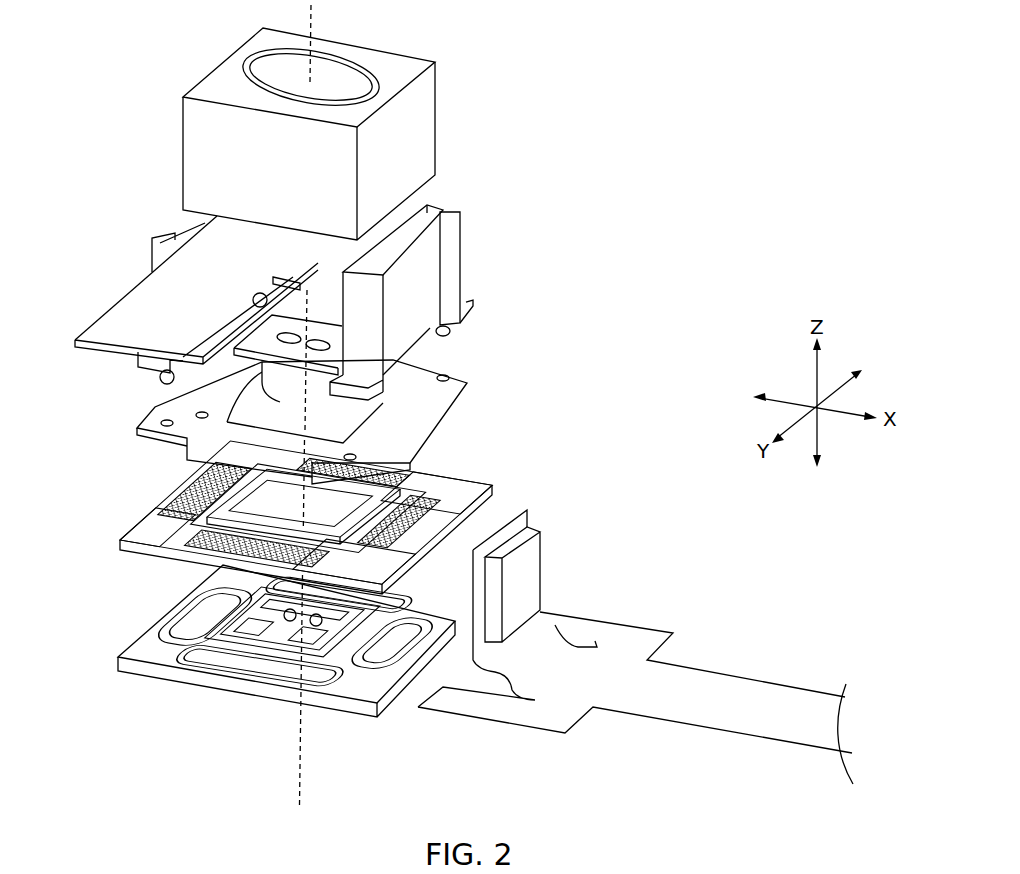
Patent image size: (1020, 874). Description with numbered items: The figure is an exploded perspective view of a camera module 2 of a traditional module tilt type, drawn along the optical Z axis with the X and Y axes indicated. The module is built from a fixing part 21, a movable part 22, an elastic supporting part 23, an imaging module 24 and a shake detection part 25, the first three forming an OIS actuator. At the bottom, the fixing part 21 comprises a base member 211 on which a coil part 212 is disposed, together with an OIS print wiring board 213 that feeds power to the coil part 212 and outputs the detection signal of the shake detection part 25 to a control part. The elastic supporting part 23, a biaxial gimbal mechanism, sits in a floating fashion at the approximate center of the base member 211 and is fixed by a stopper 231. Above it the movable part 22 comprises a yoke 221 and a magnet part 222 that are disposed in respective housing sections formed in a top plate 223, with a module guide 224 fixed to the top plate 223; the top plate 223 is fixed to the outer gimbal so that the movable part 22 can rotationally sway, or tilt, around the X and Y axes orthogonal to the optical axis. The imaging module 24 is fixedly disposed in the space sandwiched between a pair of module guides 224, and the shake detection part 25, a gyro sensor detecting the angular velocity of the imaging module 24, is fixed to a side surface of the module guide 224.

The camera module 2 is at (562, 92).
The fixing part 21 is at (360, 720).
The base member 211 is at (118, 660).
The coil part 212 is at (265, 679).
The OIS print wiring board 213 is at (668, 636).
The movable part 22 is at (576, 224).
The yoke 221 is at (470, 380).
The magnet part 222 is at (183, 503).
The top plate 223 is at (483, 483).
The module guide 224 is at (463, 240).
The elastic supporting part 23 is at (250, 638).
The stopper 231 is at (300, 327).
The imaging module 24 is at (437, 102).
The shake detection part 25 is at (530, 558).